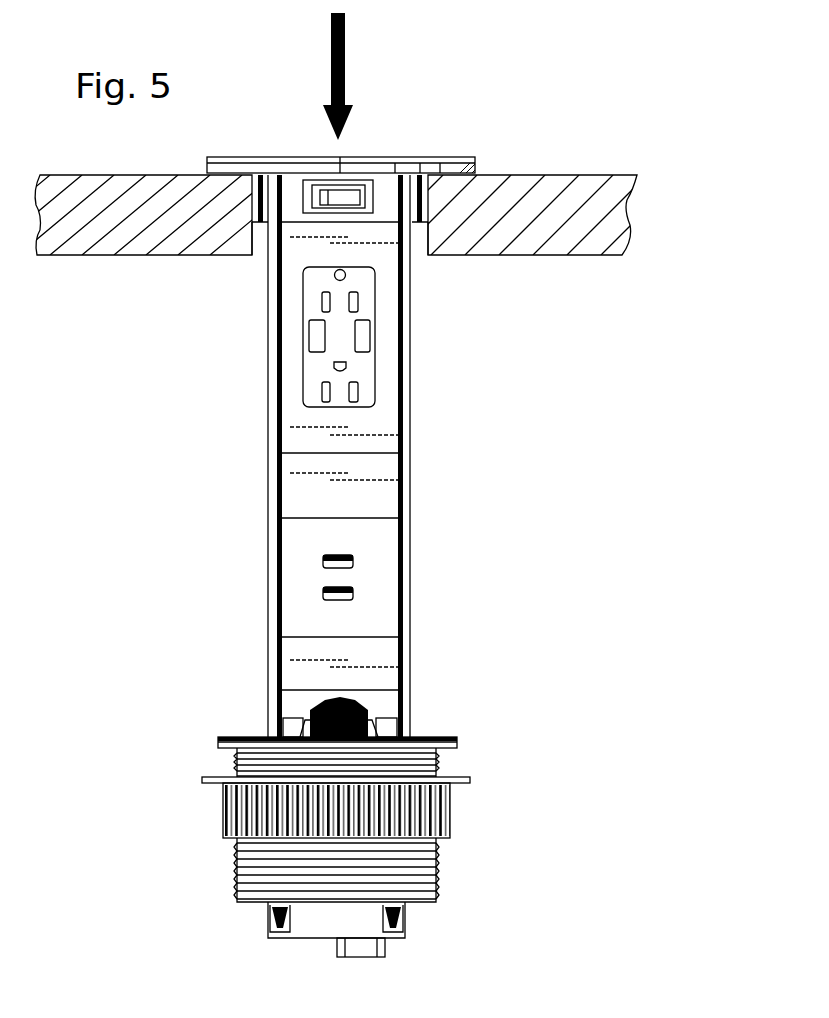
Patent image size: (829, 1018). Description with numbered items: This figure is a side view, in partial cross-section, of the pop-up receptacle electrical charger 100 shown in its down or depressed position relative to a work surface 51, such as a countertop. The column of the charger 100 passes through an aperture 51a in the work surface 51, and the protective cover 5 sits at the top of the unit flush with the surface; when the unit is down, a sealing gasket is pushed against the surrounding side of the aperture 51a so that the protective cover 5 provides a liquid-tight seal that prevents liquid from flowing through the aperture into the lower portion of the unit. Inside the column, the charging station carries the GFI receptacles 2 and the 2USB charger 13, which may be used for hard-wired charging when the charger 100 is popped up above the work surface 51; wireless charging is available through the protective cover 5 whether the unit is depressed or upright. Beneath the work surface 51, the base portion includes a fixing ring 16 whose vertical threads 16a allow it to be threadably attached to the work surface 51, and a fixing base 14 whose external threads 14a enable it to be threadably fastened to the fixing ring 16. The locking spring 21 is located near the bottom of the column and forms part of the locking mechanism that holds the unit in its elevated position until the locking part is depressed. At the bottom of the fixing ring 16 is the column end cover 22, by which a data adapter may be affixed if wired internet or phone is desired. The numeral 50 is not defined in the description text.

The pop-up receptacle electrical charger 100 is at (430, 483).
The GFI receptacles 2 is at (378, 296).
The protective cover 5 is at (405, 157).
The 2USB charger 13 is at (375, 572).
The fixing base 14 is at (445, 736).
The external threads 14a is at (440, 860).
The fixing ring 16 is at (460, 777).
The vertical threads 16a is at (455, 797).
The locking spring 21 is at (268, 716).
The column end cover 22 is at (320, 920).
The countertop / work surface 50 is at (640, 211).
The work surface 51 is at (572, 175).
The aperture 51a is at (265, 258).